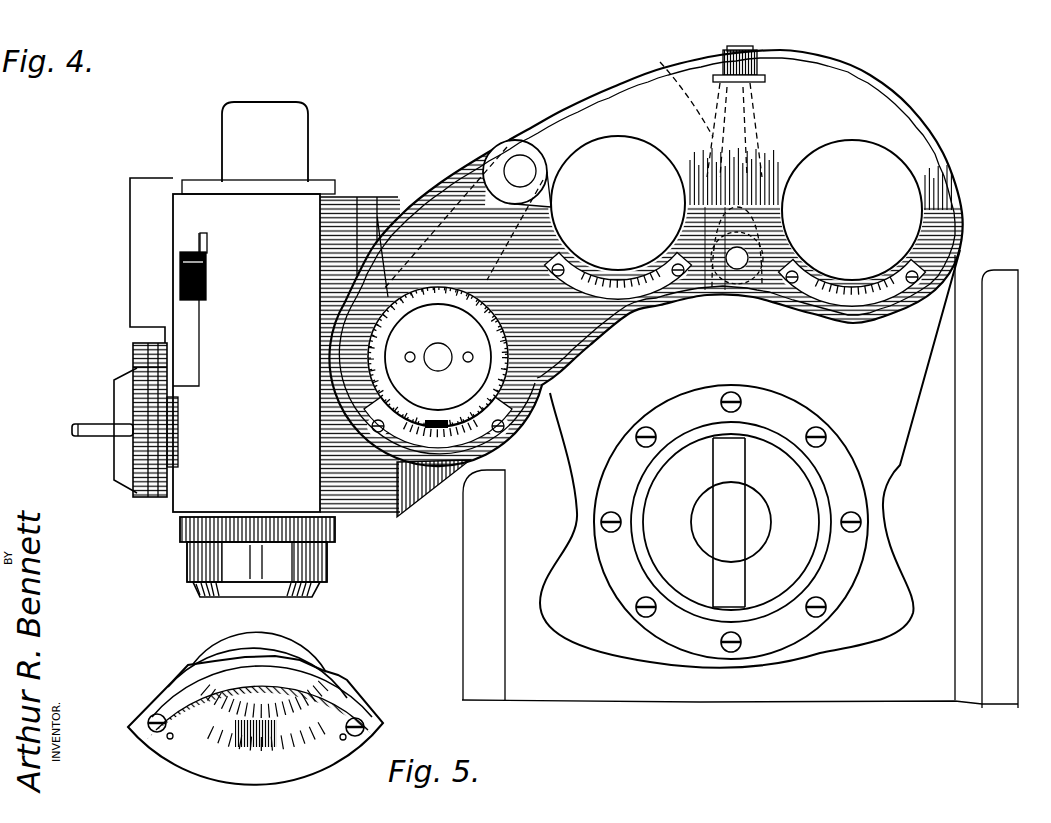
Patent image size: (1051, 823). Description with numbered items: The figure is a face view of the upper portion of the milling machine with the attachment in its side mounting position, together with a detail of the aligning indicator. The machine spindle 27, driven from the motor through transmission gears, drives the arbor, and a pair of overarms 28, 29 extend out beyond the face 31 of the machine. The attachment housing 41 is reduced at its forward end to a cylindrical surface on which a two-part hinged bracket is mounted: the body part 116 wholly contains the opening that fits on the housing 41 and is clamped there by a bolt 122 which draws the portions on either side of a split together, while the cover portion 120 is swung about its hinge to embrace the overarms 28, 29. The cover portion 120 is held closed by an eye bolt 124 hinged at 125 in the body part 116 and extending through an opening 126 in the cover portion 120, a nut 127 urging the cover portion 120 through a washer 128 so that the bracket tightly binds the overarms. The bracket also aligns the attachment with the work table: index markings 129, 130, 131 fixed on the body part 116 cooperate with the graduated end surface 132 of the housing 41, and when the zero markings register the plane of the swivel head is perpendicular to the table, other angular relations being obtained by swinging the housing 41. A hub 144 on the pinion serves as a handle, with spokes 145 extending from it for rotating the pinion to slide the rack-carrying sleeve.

In FIG. 4, the spindle 27 is at (748, 535).
In FIG. 4, the overarm 28 is at (593, 153).
In FIG. 4, the overarm 29 is at (893, 167).
In FIG. 4, the face 31 is at (888, 632).
In FIG. 4, the housing 41 is at (507, 377).
In FIG. 4, the body part 116 is at (590, 330).
In FIG. 4, the cover portion 120 is at (877, 120).
In FIG. 4, the bolt 122 is at (459, 165).
In FIG. 4, the eye bolt 124 is at (740, 133).
In FIG. 4, the hinge 125 is at (738, 262).
In FIG. 4, the opening 126 is at (660, 62).
In FIG. 4, the nut 127 is at (752, 62).
In FIG. 4, the washer 128 is at (757, 77).
In FIG. 4, the index marking 129 is at (840, 300).
In FIG. 4, the index marking 130 is at (650, 293).
In FIG. 4, the index marking 131 is at (470, 420).
In FIG. 5, the index marking 131 is at (310, 737).
In FIG. 4, the end surface 132 is at (378, 215).
In FIG. 5, the end surface 132 is at (280, 702).
In FIG. 4, the hub 144 is at (147, 497).
In FIG. 4, the spokes 145 is at (88, 413).